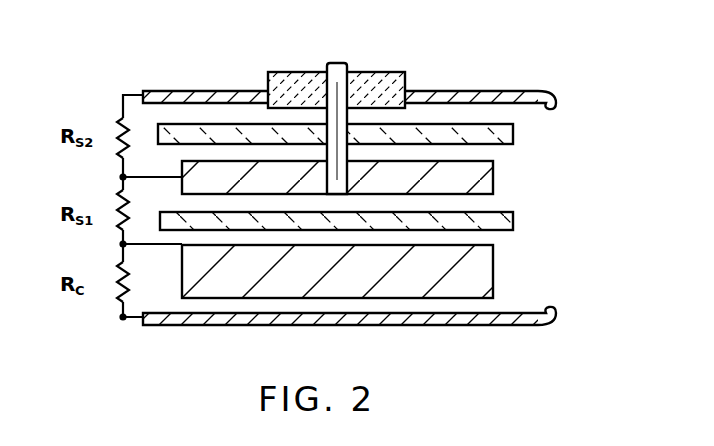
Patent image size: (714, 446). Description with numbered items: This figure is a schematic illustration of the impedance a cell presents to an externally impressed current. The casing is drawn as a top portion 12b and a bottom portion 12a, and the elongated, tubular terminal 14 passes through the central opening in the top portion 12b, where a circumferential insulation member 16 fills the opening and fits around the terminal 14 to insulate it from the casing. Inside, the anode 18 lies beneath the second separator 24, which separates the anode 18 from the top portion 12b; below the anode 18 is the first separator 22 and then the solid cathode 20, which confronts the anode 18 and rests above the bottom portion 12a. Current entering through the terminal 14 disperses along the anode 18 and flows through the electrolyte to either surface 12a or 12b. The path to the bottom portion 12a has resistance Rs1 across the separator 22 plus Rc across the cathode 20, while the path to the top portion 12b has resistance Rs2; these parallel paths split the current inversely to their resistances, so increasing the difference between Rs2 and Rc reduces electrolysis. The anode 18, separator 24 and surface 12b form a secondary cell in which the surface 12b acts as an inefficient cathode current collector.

The bottom portion 12a is at (537, 326).
The top portion 12b is at (529, 92).
The terminal 14 is at (358, 80).
The insulation member 16 is at (303, 88).
The anode 18 is at (494, 177).
The solid cathode 20 is at (494, 268).
The first separator 22 is at (514, 220).
The second separator 24 is at (514, 132).